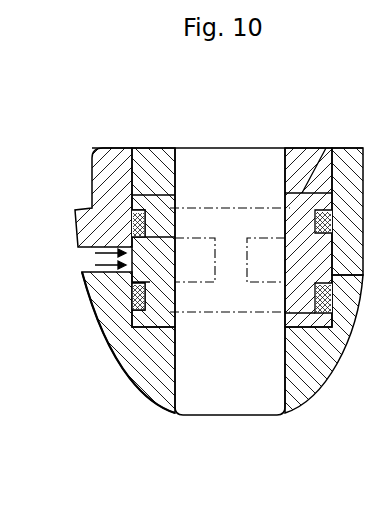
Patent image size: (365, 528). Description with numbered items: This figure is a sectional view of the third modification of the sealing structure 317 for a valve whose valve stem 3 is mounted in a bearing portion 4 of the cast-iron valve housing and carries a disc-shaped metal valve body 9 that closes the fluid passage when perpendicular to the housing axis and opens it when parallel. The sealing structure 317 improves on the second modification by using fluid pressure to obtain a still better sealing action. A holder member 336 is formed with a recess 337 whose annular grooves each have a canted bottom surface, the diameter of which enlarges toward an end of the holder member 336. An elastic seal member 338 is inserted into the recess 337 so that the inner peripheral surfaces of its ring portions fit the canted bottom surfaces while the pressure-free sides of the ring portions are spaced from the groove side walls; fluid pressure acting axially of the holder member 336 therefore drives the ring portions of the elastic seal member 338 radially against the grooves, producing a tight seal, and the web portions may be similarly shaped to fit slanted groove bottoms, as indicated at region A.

The valve stem 3 is at (258, 408).
The bearing portion 4 is at (93, 163).
The valve body 9 is at (325, 365).
The sealing structure 317 is at (142, 345).
The holder member 336 is at (297, 148).
The recess 337 is at (230, 102).
The elastic seal member 338 is at (315, 220).
The region A is at (320, 180).